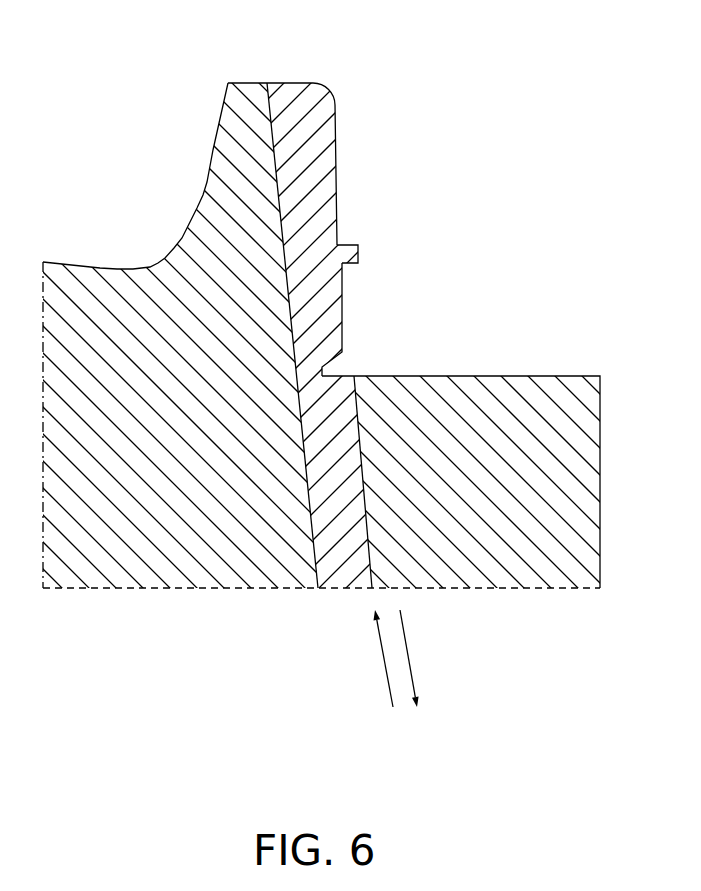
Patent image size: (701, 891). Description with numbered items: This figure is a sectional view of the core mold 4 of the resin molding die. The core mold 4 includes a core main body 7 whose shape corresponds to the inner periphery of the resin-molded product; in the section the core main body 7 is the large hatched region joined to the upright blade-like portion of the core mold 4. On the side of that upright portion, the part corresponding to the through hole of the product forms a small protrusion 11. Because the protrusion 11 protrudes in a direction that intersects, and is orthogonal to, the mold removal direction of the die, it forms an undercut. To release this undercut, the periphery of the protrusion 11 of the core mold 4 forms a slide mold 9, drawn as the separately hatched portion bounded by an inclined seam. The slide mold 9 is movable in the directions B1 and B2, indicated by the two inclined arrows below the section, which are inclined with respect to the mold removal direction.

The core mold 4 is at (262, 56).
The core main body 7 is at (213, 570).
The slide mold 9 is at (353, 570).
The protrusion 11 is at (360, 255).
The direction B1 is at (385, 674).
The direction B2 is at (423, 674).